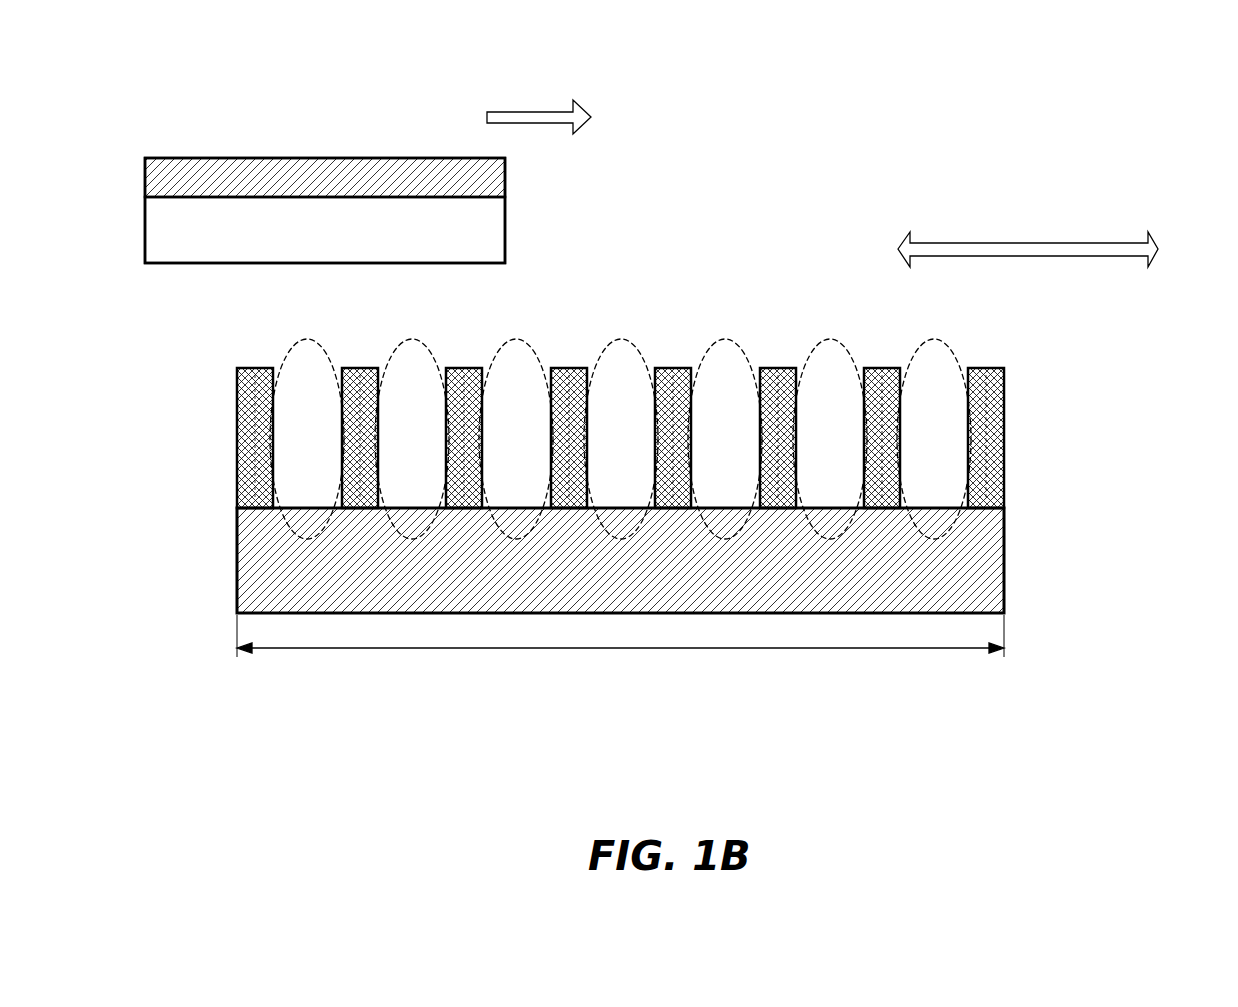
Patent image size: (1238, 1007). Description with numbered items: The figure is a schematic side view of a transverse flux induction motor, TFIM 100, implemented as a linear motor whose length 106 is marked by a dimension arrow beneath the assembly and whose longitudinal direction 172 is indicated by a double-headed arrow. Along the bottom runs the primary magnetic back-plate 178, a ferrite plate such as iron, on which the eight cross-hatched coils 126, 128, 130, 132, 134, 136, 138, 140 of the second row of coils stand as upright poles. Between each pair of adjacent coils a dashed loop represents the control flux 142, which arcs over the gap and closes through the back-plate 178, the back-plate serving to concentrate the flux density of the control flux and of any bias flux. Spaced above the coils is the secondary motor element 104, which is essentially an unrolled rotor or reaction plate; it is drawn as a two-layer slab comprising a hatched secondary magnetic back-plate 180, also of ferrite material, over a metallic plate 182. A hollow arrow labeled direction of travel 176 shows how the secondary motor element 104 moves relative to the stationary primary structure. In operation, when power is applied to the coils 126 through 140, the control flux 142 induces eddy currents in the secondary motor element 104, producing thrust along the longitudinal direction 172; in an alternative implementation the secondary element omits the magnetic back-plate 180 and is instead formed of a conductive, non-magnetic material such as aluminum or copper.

The transverse flux induction motor 100 is at (783, 142).
The secondary motor element 104 is at (262, 155).
The length 106 is at (662, 648).
The coil 126 is at (237, 404).
The coil 128 is at (342, 404).
The coil 130 is at (446, 404).
The coil 132 is at (551, 404).
The coil 134 is at (655, 404).
The coil 136 is at (760, 404).
The coil 138 is at (864, 404).
The coil 140 is at (968, 404).
The control flux 142 is at (306, 335).
The longitudinal direction 172 is at (1037, 243).
The direction of travel 176 is at (540, 110).
The primary magnetic back-plate 178 is at (583, 598).
The secondary magnetic back-plate 180 is at (483, 189).
The metallic plate 182 is at (362, 246).